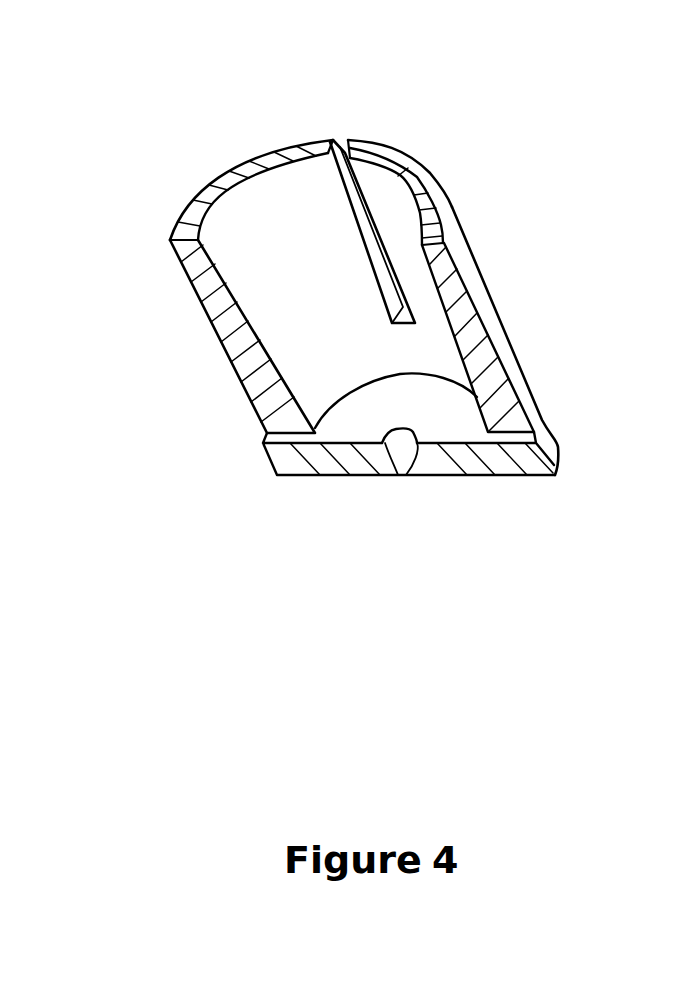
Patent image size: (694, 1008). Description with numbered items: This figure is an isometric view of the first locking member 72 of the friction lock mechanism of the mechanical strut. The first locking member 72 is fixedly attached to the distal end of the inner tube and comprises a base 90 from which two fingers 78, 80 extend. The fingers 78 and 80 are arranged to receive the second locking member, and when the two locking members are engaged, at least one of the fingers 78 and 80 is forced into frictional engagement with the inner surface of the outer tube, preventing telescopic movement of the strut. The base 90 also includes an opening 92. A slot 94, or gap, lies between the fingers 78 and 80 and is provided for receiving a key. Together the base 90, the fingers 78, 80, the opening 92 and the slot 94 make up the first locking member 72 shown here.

The first locking member 72 is at (523, 122).
The finger 78 is at (472, 308).
The finger 80 is at (256, 312).
The base 90 is at (465, 433).
The opening 92 is at (402, 448).
The slot 94 is at (343, 145).